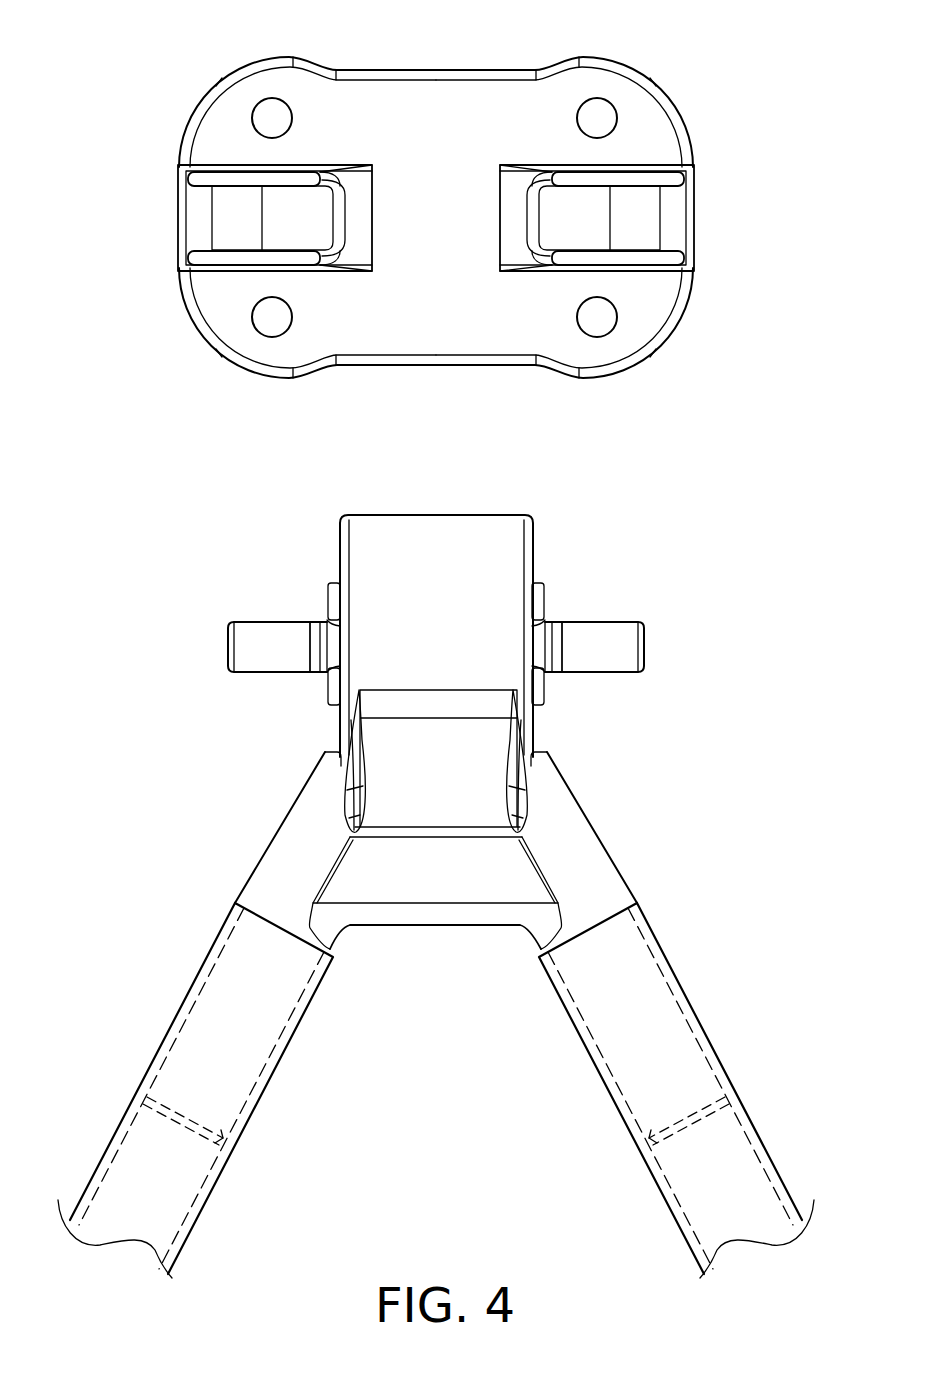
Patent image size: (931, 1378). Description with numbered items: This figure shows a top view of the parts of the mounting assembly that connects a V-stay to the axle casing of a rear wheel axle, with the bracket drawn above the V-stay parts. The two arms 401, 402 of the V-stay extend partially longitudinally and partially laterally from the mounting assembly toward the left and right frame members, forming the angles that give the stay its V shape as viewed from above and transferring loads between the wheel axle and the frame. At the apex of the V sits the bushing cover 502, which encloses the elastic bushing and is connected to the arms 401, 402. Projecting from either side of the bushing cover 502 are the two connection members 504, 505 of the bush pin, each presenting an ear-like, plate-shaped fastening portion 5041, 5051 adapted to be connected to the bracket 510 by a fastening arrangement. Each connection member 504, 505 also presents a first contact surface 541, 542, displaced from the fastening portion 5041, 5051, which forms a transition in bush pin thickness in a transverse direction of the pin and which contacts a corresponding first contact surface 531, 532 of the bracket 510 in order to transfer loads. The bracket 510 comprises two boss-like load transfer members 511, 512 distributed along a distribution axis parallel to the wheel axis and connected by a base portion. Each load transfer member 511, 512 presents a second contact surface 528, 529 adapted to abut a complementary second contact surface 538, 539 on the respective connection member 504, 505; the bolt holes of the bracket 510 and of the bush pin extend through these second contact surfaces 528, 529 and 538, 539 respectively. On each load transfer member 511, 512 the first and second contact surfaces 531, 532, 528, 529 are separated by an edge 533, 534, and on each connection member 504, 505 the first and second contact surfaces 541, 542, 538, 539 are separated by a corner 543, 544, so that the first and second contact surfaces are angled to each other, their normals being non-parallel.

The arm 401 is at (205, 1075).
The arm 402 is at (667, 1075).
The bushing cover 502 is at (434, 566).
The connection member 504 is at (250, 636).
The connection member 505 is at (622, 636).
The fastening portion 5041 is at (250, 660).
The fastening portion 5051 is at (622, 660).
The bracket 510 is at (430, 104).
The load transfer member 511 is at (190, 222).
The load transfer member 512 is at (682, 222).
The second contact surface 528 is at (218, 258).
The second contact surface 529 is at (654, 258).
The first contact surface 531 is at (342, 190).
The first contact surface 532 is at (528, 190).
The edge 533 is at (343, 260).
The edge 534 is at (528, 260).
The second contact surface 538 is at (272, 620).
The second contact surface 539 is at (600, 620).
The first contact surface 541 is at (327, 608).
The first contact surface 542 is at (545, 608).
The corner 543 is at (325, 620).
The corner 544 is at (547, 620).